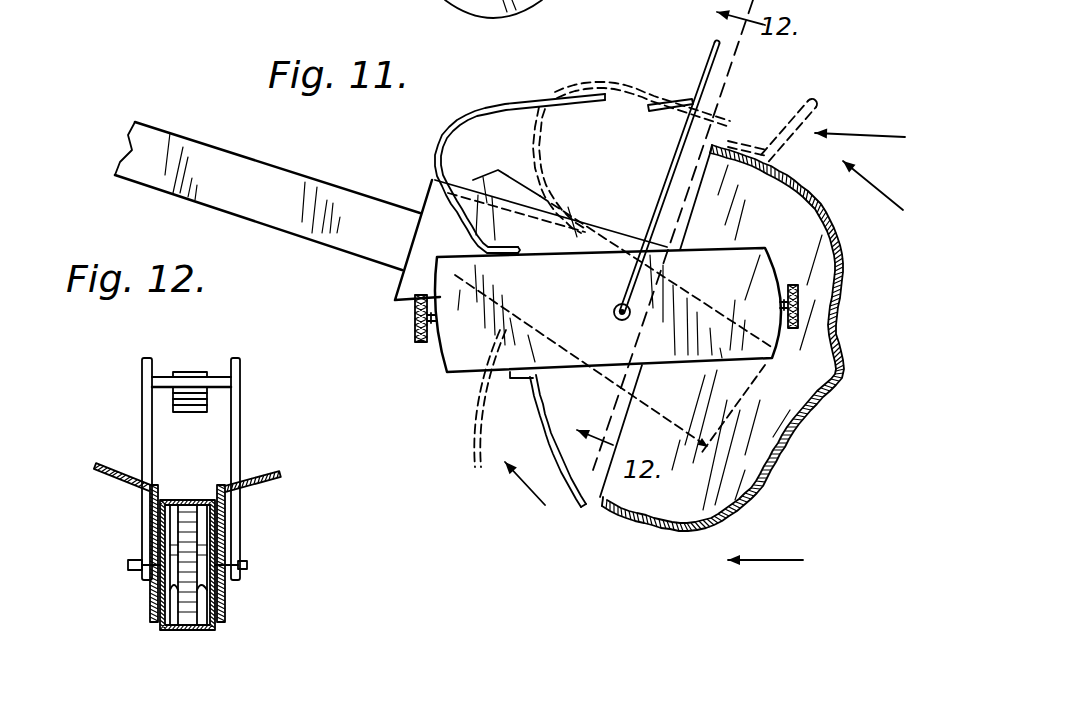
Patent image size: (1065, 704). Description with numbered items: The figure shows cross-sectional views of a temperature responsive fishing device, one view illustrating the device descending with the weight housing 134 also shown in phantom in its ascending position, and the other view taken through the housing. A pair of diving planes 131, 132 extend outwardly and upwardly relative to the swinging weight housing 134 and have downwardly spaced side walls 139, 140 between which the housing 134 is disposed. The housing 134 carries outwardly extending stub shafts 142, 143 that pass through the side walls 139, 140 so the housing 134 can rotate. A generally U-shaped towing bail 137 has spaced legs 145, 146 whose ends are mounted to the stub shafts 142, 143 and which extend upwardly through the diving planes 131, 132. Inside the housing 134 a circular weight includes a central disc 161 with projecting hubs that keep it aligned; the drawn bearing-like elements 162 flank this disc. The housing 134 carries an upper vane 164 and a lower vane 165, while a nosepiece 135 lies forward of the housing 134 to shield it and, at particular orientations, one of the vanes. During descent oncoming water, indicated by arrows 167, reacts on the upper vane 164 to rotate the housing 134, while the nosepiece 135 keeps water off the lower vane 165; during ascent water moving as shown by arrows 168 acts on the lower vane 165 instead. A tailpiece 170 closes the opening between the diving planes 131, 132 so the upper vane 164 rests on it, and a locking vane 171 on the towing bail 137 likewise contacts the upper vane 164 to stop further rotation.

In FIG. 11, the tailpiece 170 is at (277, 173).
In FIG. 11, the upper vane 164 is at (462, 132).
In FIG. 11, the locking vane 171 is at (672, 100).
In FIG. 12, the locking vane 171 is at (193, 392).
In FIG. 11, the towing bail 137 is at (790, 124).
In FIG. 12, the towing bail 137 is at (237, 398).
In FIG. 11, the arrows 167 is at (880, 135).
In FIG. 11, the arrows 168 is at (540, 498).
In FIG. 11, the nosepiece 135 is at (817, 268).
In FIG. 11, the stub shaft 142 is at (614, 310).
In FIG. 12, the stub shaft 142 is at (128, 565).
In FIG. 11, the swinging weight housing 134 is at (450, 370).
In FIG. 11, the lower vane 165 is at (585, 512).
In FIG. 12, the leg 145 is at (142, 410).
In FIG. 12, the leg 146 is at (237, 428).
In FIG. 12, the diving plane 131 is at (97, 463).
In FIG. 12, the diving plane 132 is at (273, 468).
In FIG. 12, the stub shaft 143 is at (247, 565).
In FIG. 12, the bearing 162 is at (165, 588).
In FIG. 12, the side wall 139 is at (152, 615).
In FIG. 12, the side wall 140 is at (218, 622).
In FIG. 12, the central disc 161 is at (187, 617).